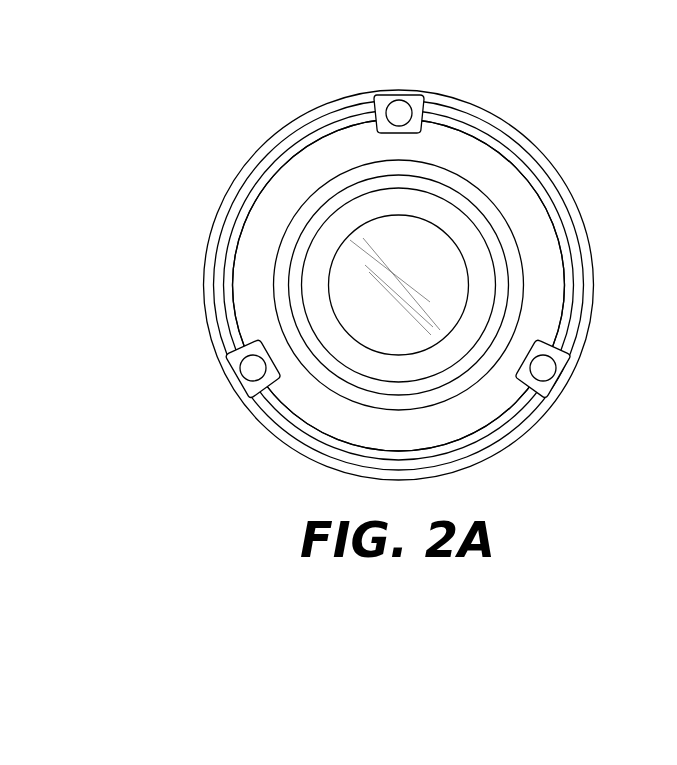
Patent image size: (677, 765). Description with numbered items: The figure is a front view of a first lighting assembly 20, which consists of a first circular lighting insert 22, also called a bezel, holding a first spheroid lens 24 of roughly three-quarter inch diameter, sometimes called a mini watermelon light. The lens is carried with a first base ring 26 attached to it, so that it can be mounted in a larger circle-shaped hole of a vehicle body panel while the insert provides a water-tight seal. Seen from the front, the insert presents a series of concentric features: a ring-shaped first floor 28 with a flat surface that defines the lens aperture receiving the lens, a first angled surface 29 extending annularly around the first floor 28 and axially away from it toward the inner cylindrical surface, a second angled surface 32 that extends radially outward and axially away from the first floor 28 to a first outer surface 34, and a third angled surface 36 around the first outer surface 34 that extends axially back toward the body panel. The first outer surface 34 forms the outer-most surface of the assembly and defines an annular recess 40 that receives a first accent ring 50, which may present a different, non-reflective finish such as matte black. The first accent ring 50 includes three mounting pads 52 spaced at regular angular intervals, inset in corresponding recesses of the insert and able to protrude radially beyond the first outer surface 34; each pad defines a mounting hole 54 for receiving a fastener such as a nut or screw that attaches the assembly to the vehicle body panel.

The first lighting assembly 20 is at (404, 258).
The first circular lighting insert 22 is at (428, 285).
The first spheroid lens 24 is at (437, 265).
The first base ring 26 is at (488, 276).
The first floor 28 is at (297, 272).
The first angled surface 29 is at (278, 293).
The second angled surface 32 is at (550, 300).
The first outer surface 34 is at (583, 302).
The third angled surface 36 is at (585, 330).
The annular recess 40 is at (290, 144).
The first accent ring 50 is at (478, 132).
The mounting pads 52 is at (384, 96).
The mounting holes 54 is at (393, 112).